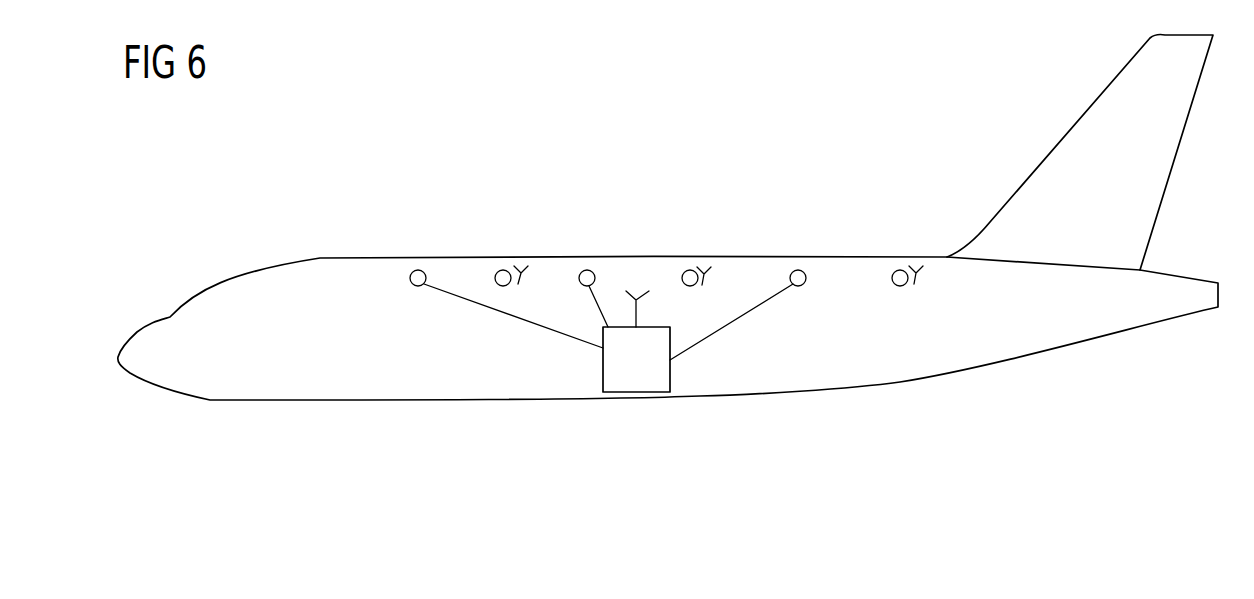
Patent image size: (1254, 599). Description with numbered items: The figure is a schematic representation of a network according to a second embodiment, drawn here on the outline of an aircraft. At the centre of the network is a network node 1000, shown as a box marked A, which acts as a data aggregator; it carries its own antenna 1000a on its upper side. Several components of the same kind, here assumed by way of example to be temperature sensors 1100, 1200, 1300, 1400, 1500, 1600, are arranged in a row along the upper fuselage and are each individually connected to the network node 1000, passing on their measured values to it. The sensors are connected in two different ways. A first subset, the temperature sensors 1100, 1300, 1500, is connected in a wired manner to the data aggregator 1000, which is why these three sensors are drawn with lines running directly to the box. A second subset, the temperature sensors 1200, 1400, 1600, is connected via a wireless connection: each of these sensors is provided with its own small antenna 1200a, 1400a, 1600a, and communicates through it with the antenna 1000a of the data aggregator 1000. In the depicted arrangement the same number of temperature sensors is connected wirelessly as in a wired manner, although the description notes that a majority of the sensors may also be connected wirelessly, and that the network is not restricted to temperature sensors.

The network node 1000 is at (603, 372).
The antenna of the data aggregator 1000a is at (639, 296).
The temperature sensor 1100 is at (416, 269).
The temperature sensor 1200 is at (499, 269).
The antenna 1200a is at (529, 262).
The temperature sensor 1300 is at (587, 269).
The temperature sensor 1400 is at (689, 269).
The antenna 1400a is at (708, 265).
The temperature sensor 1500 is at (797, 269).
The temperature sensor 1600 is at (895, 269).
The antenna 1600a is at (921, 265).